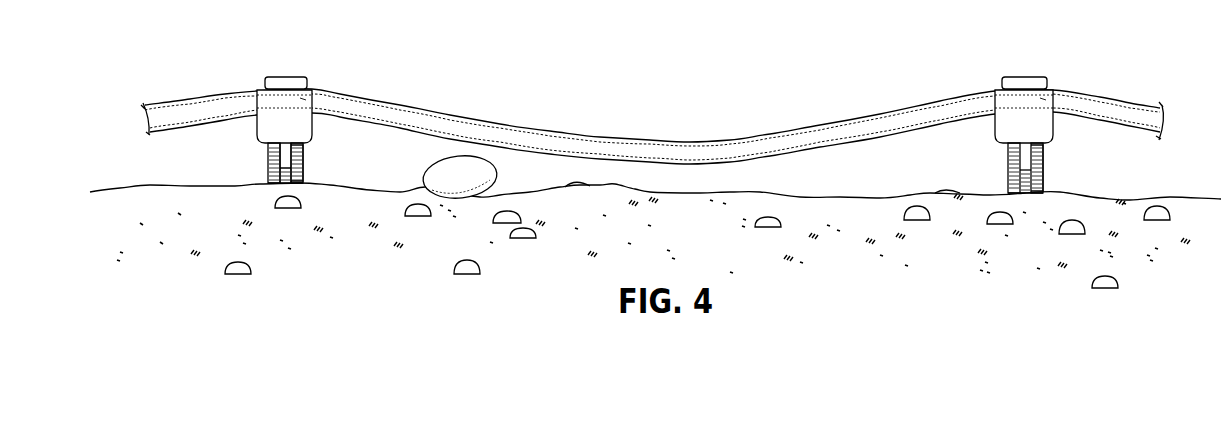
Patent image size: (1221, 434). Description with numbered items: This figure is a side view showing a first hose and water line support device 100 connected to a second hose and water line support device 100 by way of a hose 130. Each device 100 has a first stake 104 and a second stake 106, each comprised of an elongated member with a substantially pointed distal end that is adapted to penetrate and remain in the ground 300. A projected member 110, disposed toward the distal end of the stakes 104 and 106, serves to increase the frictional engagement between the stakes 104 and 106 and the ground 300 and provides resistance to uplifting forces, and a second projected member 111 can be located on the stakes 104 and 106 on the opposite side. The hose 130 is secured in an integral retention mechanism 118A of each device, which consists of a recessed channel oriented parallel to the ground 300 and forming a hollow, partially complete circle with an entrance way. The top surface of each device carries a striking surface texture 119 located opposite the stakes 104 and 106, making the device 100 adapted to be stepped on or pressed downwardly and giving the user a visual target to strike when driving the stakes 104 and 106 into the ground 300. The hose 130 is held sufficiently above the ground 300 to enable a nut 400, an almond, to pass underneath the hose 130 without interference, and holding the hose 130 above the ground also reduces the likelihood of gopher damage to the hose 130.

The hose and water line support device 100 is at (290, 75).
The first stake 104 is at (303, 167).
The second stake 106 is at (1043, 167).
The projected member 110 is at (267, 173).
The second projected member 111 is at (303, 187).
The integral retention mechanism 118A is at (318, 93).
The striking surface texture 119 is at (303, 83).
The hose 130 is at (200, 93).
The ground 300 is at (145, 185).
The nut 400 is at (453, 157).